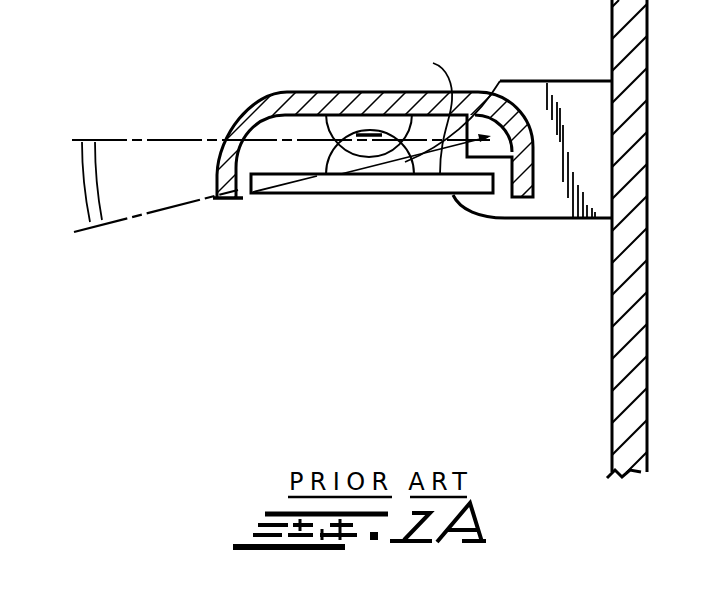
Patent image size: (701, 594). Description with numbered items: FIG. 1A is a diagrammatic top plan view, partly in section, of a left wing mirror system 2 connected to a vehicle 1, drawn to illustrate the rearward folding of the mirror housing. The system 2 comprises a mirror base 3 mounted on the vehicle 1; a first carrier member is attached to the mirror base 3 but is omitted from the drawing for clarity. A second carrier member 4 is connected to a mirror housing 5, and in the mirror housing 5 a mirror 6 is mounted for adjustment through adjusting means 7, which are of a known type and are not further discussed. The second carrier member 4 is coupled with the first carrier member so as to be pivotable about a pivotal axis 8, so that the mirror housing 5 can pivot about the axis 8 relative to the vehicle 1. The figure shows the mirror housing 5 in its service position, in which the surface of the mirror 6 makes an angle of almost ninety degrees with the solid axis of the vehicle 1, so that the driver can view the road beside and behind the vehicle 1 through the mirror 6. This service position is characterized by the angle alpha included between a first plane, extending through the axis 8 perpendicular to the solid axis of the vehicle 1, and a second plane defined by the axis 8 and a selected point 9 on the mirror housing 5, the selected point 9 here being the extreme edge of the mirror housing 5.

The vehicle 1 is at (632, 266).
The left wing mirror system 2 is at (207, 108).
The mirror base 3 is at (538, 98).
The second carrier member 4 is at (435, 111).
The mirror housing 5 is at (272, 104).
The mirror 6 is at (341, 192).
The adjusting means 7 is at (371, 142).
The pivotal axis 8 is at (505, 127).
The selected point 9 is at (218, 214).